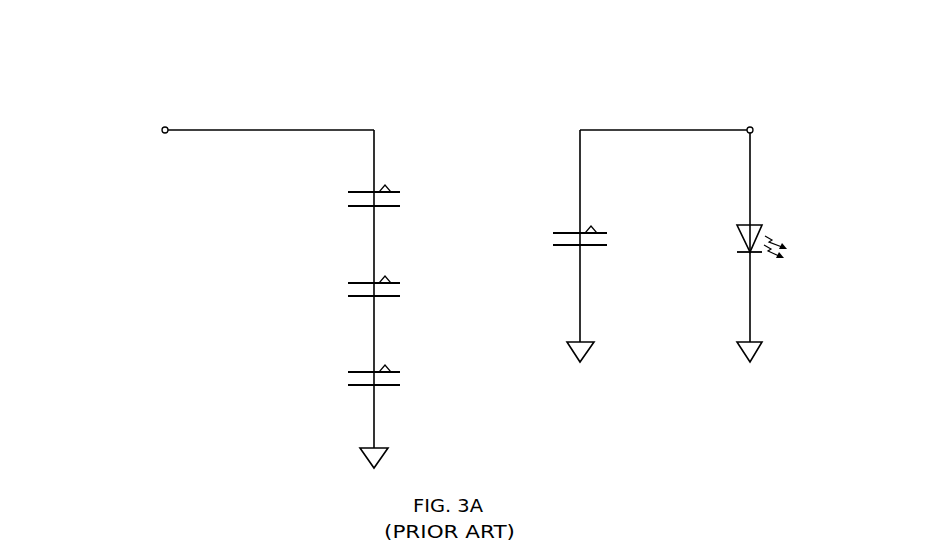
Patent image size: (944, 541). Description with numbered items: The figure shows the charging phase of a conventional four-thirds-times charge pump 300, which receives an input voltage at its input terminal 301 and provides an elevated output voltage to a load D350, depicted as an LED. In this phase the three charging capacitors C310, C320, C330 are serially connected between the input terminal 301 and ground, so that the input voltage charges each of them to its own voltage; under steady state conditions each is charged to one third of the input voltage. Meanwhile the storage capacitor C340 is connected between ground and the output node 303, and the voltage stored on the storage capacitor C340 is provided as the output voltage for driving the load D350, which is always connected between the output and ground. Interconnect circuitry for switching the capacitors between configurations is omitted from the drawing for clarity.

The charge pump 300 is at (96, 74).
The input terminal 301 is at (165, 127).
The output node V_OUT3 303 is at (750, 127).
The charging capacitor C310 is at (367, 198).
The charging capacitor C320 is at (367, 288).
The charging capacitor C330 is at (367, 377).
The storage capacitor C340 is at (574, 238).
The load D350 is at (735, 241).